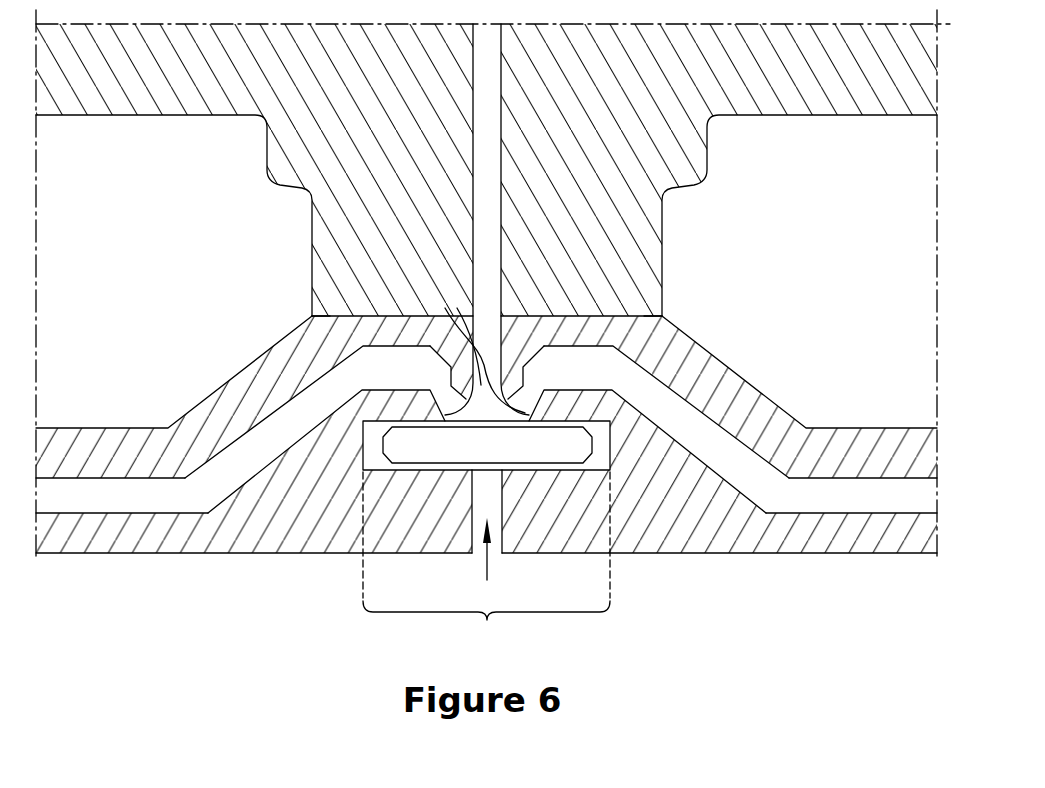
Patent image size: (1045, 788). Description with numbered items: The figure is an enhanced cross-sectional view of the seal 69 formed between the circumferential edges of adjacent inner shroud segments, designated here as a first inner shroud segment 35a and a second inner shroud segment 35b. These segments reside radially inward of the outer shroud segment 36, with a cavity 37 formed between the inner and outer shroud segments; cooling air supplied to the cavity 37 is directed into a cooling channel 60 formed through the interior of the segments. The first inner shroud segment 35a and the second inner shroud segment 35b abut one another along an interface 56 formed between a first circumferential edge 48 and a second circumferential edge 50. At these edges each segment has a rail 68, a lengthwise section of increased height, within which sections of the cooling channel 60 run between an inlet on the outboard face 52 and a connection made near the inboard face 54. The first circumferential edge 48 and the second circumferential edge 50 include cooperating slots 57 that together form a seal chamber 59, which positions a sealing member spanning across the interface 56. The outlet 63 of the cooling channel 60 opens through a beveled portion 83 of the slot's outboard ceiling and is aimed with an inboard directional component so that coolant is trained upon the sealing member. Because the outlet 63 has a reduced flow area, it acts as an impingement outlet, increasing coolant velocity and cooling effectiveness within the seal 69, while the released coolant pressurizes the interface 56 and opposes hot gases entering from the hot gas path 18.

The hot gas path 18 is at (219, 639).
The first inner shroud segment 35a is at (627, 518).
The second inner shroud segment 35b is at (309, 516).
The outer shroud segment 36 is at (149, 68).
The cavity 37 is at (131, 240).
The first circumferential edge 48 is at (498, 553).
The second circumferential edge 50 is at (473, 553).
The outboard face 52 is at (113, 428).
The inboard face 54 is at (143, 554).
The interface 56 is at (503, 333).
The slot 57 is at (377, 452).
The seal chamber 59 is at (486, 560).
The cooling channel 60 is at (106, 507).
The outlet 63 is at (448, 397).
The rail 68 is at (365, 330).
The seal 69 is at (487, 580).
The beveled portion 83 is at (473, 346).